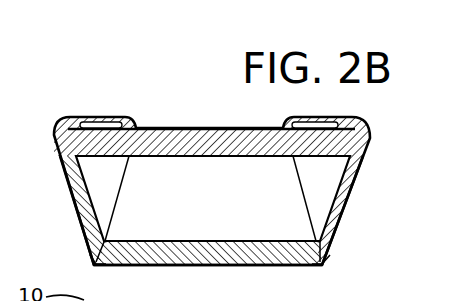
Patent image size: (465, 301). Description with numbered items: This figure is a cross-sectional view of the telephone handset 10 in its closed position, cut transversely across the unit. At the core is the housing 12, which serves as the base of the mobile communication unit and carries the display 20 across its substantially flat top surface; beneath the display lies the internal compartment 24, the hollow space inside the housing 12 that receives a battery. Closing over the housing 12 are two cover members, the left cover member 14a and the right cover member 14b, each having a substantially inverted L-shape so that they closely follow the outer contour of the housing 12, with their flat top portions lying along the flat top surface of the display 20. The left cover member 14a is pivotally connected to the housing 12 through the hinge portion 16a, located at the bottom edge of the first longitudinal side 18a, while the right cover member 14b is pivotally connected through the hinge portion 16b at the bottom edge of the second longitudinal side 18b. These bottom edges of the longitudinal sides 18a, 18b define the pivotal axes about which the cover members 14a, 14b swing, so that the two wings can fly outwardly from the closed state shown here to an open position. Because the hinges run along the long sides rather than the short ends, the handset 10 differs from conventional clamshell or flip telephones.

The telephone handset 10 is at (155, 75).
The housing 12 is at (223, 212).
The left cover member 14a is at (70, 189).
The right cover member 14b is at (353, 198).
The hinge portion 16a is at (102, 266).
The hinge portion 16b is at (325, 261).
The first longitudinal side 18a is at (93, 262).
The second longitudinal side 18b is at (355, 232).
The display 20 is at (271, 142).
The internal compartment 24 is at (243, 221).